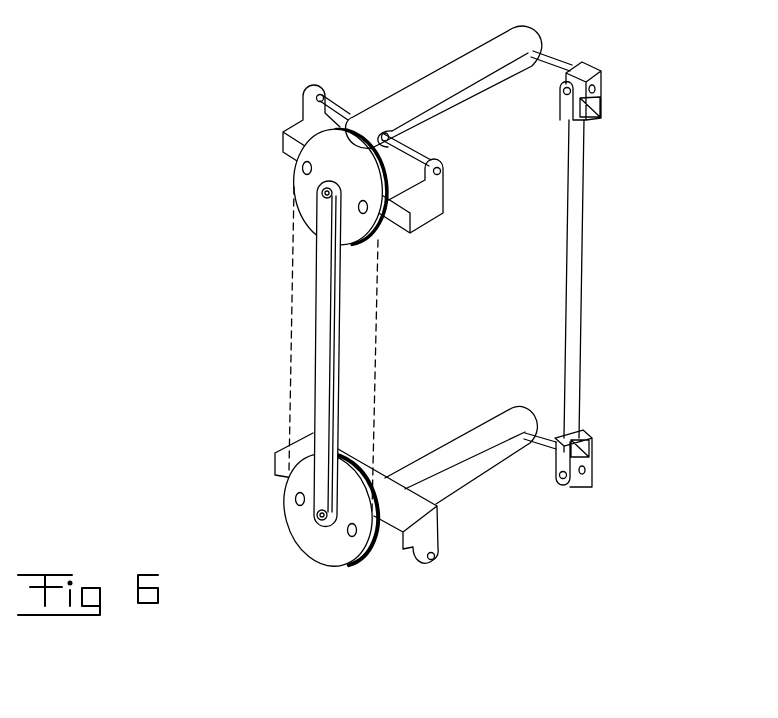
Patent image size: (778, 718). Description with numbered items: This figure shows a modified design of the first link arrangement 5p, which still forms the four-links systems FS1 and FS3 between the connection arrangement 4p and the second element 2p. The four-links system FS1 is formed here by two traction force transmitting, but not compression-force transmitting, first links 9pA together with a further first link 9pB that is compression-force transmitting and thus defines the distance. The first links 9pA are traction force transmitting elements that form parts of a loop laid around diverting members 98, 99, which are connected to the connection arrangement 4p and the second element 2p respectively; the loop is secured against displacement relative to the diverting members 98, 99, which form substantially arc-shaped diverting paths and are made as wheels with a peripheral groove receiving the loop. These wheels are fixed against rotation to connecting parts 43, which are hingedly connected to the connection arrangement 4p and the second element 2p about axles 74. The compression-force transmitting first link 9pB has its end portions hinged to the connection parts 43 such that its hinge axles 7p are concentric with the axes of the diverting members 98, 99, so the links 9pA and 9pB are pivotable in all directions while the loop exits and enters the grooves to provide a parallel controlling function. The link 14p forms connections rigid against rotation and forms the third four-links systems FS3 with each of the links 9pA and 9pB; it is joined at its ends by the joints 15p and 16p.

The second element 2p is at (495, 456).
The connection arrangement 4p is at (457, 70).
The link arrangement 5p is at (172, 433).
The hinge axles 7p is at (322, 194).
The first links 9pA is at (291, 372).
The first link 9pB is at (322, 416).
The link 14p is at (567, 300).
The upper joint 15p is at (606, 68).
The lower joint 16p is at (584, 498).
The connection parts 43 is at (418, 202).
The axles 74 is at (387, 137).
The diverting member 98 is at (313, 150).
The diverting member 99 is at (348, 552).
The four-links system FS1 is at (253, 283).
The third four-links systems FS3 is at (598, 206).